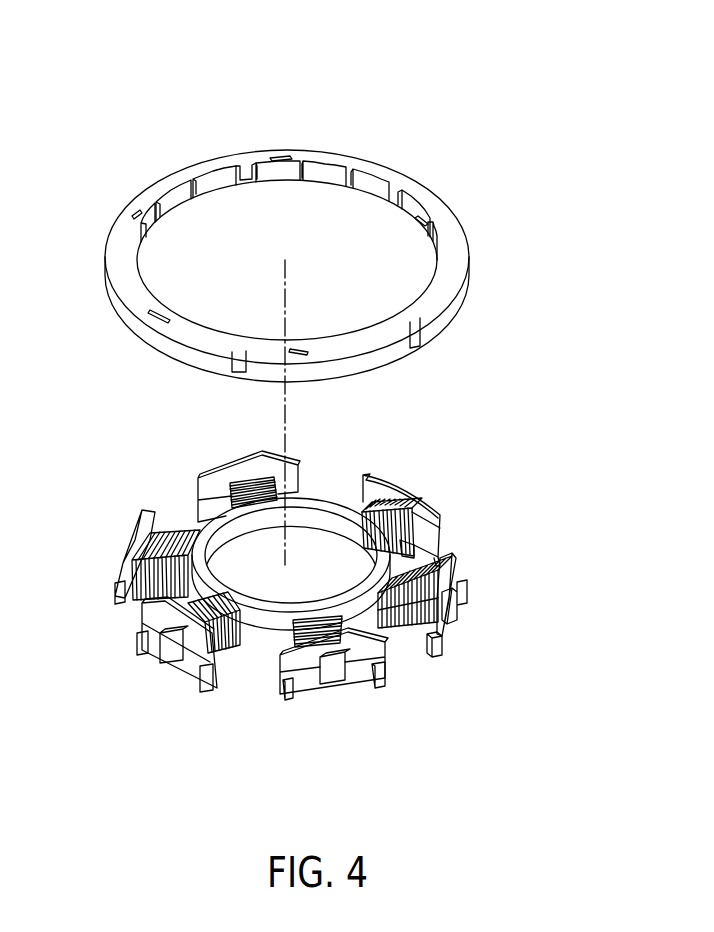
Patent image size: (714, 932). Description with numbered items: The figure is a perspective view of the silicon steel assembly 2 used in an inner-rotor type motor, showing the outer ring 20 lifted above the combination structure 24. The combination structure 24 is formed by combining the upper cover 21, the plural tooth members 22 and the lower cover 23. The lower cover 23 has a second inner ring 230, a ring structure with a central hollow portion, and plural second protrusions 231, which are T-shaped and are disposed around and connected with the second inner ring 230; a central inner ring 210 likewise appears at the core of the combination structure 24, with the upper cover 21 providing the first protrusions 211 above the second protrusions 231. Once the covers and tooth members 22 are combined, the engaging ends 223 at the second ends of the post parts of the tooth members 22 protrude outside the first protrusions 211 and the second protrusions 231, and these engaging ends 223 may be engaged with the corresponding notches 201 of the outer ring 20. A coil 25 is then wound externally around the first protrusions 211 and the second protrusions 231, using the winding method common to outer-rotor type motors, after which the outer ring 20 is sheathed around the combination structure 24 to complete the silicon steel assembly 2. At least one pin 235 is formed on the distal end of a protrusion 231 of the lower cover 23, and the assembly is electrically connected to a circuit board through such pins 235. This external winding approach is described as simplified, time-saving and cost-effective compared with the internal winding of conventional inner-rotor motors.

The silicon steel assembly 2 is at (620, 42).
The outer ring 20 is at (455, 203).
The notch 201 is at (245, 168).
The combination structure 24 is at (537, 362).
The upper cover 21 is at (425, 488).
The first protrusion 211 is at (438, 517).
The coil 25 is at (382, 510).
The second protrusion 231 is at (402, 556).
The tooth member 22 is at (455, 605).
The lower cover 23 is at (438, 658).
The hub ring 210 is at (265, 615).
The second inner ring 230 is at (265, 643).
The engaging end 223 is at (333, 678).
The pin 235 is at (378, 683).